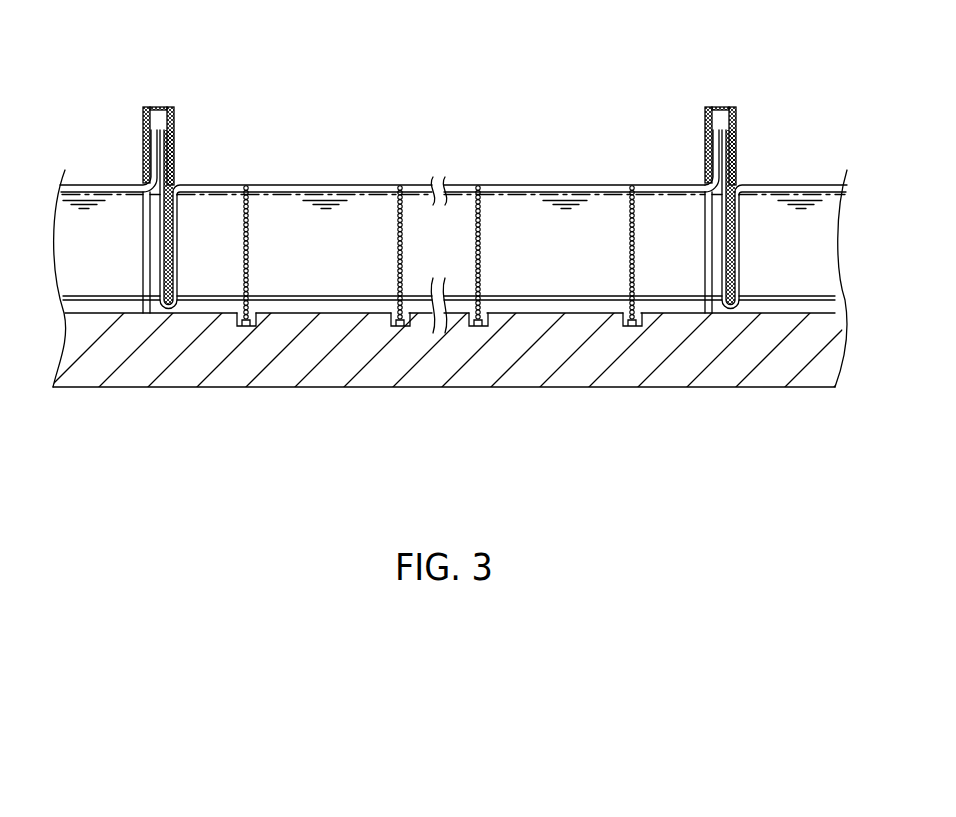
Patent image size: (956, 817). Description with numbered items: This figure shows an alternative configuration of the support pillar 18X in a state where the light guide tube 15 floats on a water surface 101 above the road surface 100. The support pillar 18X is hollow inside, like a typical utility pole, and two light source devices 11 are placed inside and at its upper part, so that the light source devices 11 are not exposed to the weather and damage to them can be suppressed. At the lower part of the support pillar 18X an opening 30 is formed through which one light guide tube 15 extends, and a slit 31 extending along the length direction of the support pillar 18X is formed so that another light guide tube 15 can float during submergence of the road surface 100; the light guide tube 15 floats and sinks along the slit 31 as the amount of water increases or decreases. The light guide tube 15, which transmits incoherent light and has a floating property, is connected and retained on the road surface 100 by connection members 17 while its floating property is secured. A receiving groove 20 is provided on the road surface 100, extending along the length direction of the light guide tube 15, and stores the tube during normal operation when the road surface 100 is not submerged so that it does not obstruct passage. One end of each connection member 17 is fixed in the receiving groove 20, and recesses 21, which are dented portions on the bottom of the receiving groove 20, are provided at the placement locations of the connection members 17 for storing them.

The light source device 11 is at (150, 107).
The support pillar 18X is at (158, 107).
The slit 31 is at (143, 182).
The light guide tube 15 is at (311, 185).
The connection member 17 is at (246, 239).
The water surface 101 is at (574, 191).
The road surface 100 is at (569, 295).
The opening 30 is at (172, 313).
The recess 21 is at (250, 328).
The receiving groove 20 is at (328, 304).